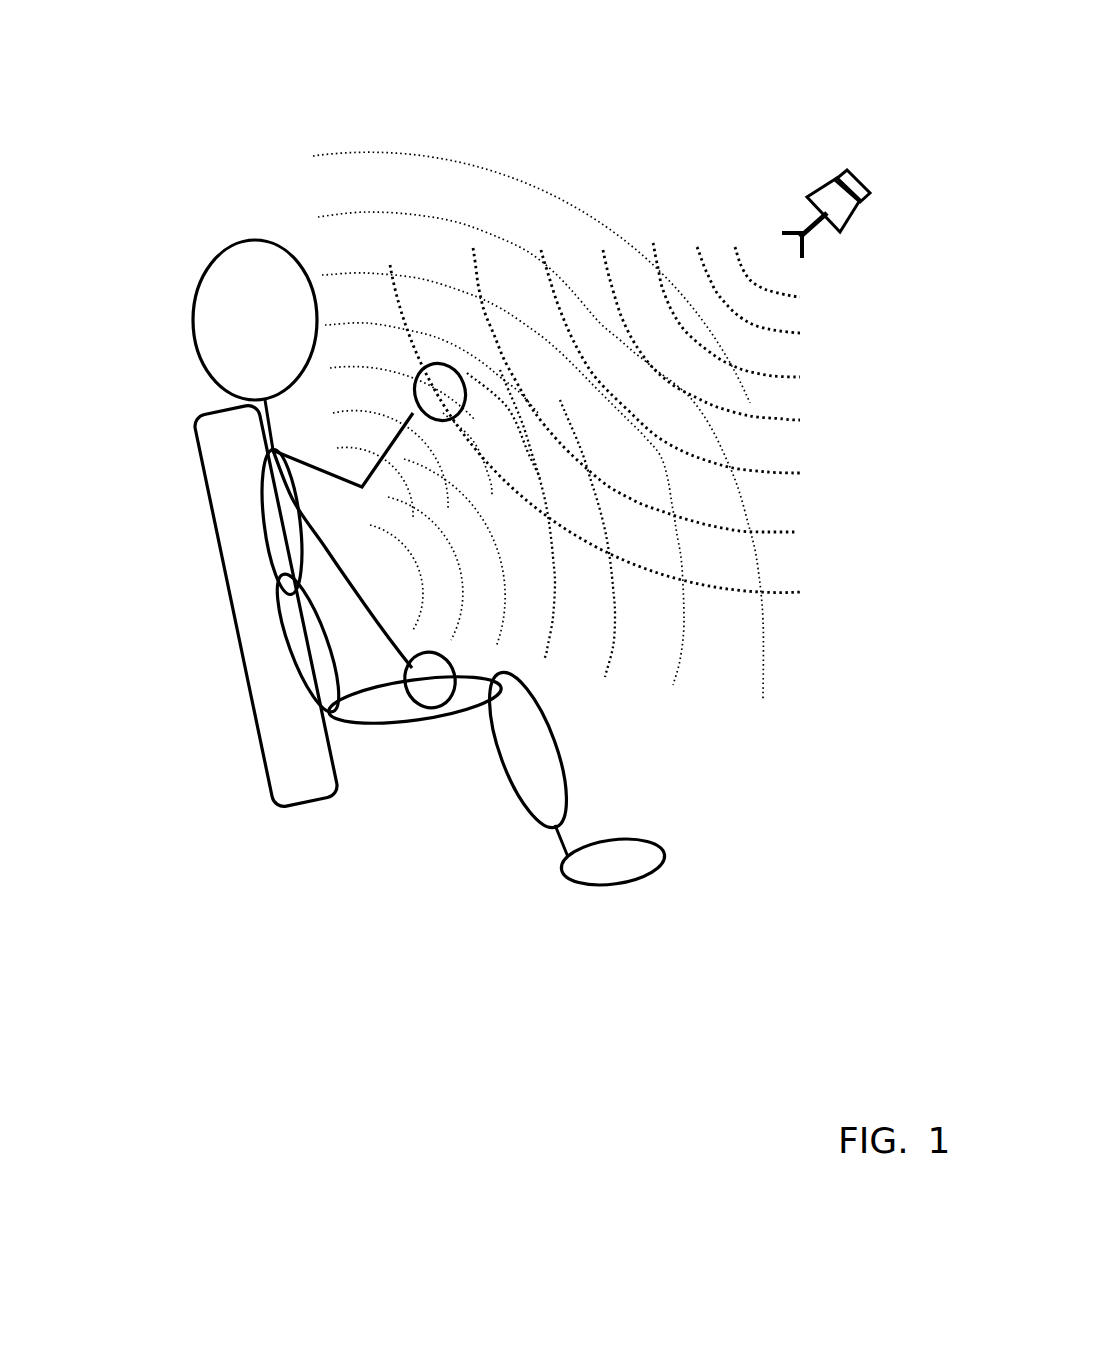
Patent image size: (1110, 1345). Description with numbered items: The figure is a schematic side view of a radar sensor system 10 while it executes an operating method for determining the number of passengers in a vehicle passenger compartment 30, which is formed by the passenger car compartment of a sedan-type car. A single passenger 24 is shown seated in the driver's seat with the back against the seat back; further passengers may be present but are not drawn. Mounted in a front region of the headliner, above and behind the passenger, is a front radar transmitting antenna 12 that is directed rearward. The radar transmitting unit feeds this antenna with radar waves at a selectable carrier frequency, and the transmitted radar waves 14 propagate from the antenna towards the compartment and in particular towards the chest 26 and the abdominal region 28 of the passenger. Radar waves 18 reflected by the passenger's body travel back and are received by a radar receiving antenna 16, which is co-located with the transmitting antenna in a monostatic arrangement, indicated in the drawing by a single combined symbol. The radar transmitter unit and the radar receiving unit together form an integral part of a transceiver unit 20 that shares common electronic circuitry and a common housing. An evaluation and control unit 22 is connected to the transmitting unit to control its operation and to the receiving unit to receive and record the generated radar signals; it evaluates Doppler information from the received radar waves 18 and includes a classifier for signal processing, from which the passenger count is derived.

The radar sensor system 10 is at (857, 171).
The front radar transmitting antenna 12 is at (800, 233).
The radar waves 14 is at (603, 256).
The radar receiving antenna 16 is at (803, 253).
The reflected radar waves 18 is at (380, 212).
The transceiver unit 20 is at (862, 226).
The evaluation and control unit 22 is at (858, 193).
The passenger 24 is at (192, 337).
The chest 26 is at (283, 507).
The abdominal region 28 is at (318, 637).
The vehicle passenger compartment 30 is at (177, 182).